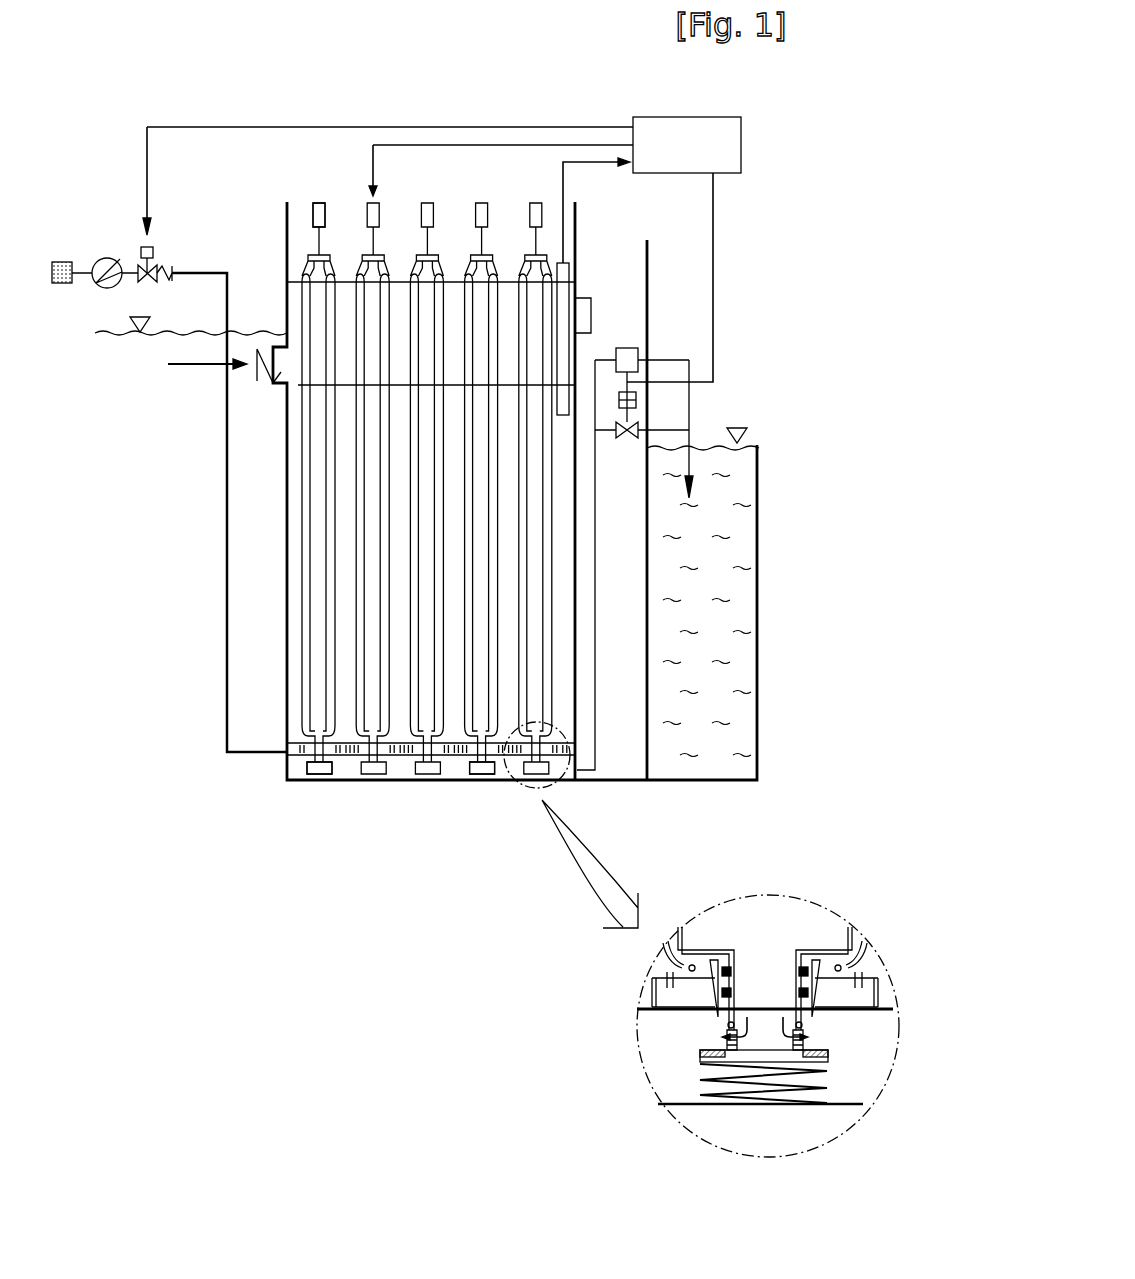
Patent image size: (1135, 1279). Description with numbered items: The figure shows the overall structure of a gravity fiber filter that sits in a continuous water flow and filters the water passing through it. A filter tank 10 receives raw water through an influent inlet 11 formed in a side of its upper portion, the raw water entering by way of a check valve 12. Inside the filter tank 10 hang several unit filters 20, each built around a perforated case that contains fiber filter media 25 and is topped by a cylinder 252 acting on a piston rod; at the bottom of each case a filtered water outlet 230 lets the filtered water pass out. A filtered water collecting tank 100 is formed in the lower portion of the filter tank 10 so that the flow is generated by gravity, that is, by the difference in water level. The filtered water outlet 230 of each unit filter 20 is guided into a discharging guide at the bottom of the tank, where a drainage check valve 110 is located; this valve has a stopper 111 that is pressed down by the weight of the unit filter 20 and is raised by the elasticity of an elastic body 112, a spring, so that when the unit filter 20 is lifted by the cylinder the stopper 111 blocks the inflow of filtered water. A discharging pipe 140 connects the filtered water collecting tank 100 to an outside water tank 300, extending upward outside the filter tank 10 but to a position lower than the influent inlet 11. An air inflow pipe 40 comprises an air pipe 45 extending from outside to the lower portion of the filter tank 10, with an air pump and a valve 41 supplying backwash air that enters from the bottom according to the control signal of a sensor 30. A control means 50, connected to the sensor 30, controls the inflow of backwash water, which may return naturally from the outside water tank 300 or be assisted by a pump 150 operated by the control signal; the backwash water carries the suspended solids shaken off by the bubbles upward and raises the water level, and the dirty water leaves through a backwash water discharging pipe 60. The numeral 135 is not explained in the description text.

The filter tank 10 is at (287, 497).
The influent inlet 11 is at (280, 370).
The check valve 12 is at (257, 365).
The unit filter 20 is at (305, 552).
The fiber filter media 25 is at (855, 948).
The sensor 30 is at (568, 320).
The air inflow pipe 40 is at (283, 752).
The valve 41 is at (147, 265).
The air pipe 45 is at (227, 680).
The control means 50 is at (694, 120).
The backwash water discharging pipe 60 is at (595, 303).
The filtered water collecting tank 100 is at (403, 782).
The drainage check valve 110 is at (488, 772).
The stopper 111 is at (828, 1058).
The elastic body 112 is at (767, 1097).
The bottom support line 135 is at (343, 773).
The discharging pipe 140 is at (597, 692).
The pump 150 is at (640, 360).
The filtered water outlet 230 is at (791, 948).
The cylinder 252 is at (322, 208).
The outside water tank 300 is at (712, 583).